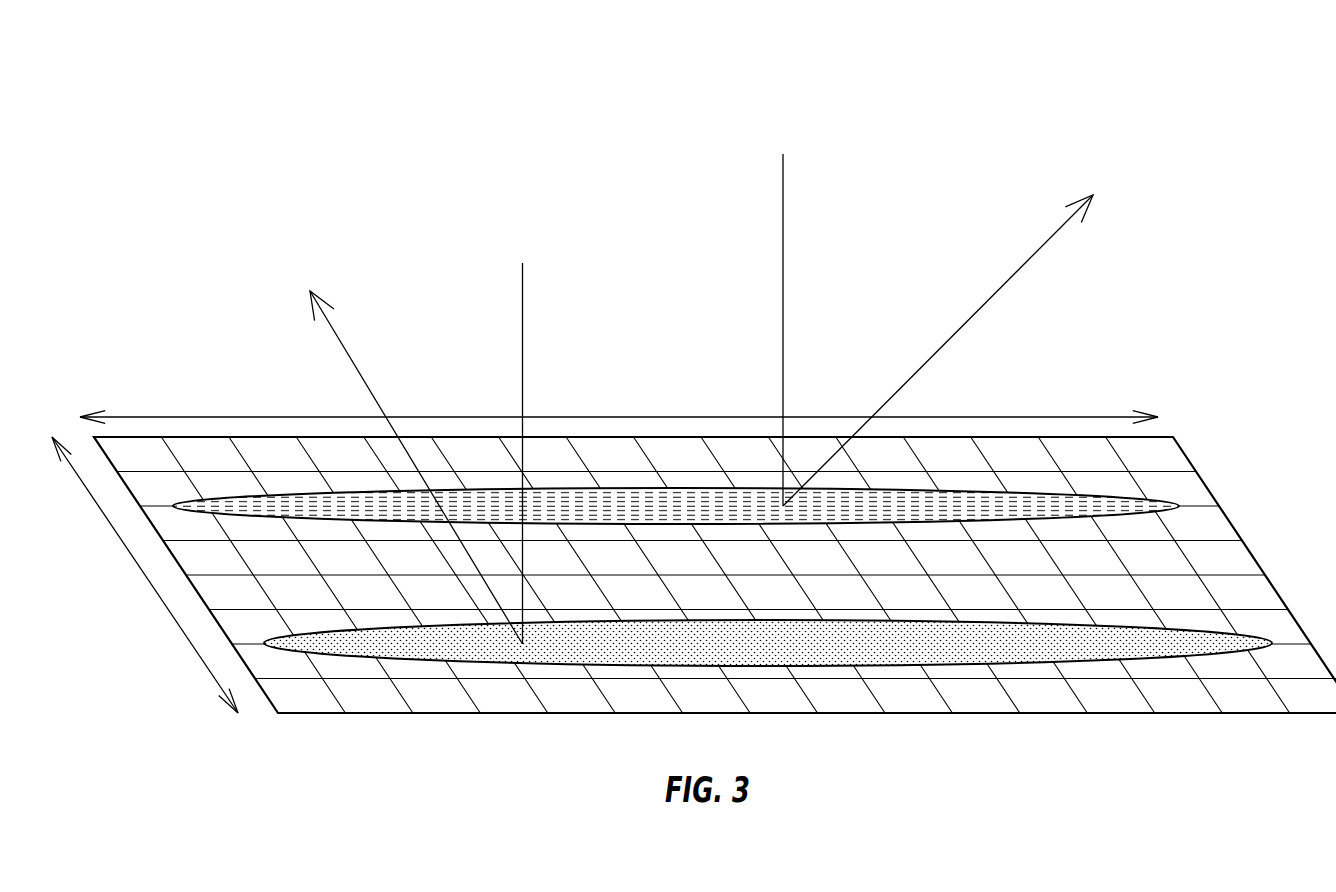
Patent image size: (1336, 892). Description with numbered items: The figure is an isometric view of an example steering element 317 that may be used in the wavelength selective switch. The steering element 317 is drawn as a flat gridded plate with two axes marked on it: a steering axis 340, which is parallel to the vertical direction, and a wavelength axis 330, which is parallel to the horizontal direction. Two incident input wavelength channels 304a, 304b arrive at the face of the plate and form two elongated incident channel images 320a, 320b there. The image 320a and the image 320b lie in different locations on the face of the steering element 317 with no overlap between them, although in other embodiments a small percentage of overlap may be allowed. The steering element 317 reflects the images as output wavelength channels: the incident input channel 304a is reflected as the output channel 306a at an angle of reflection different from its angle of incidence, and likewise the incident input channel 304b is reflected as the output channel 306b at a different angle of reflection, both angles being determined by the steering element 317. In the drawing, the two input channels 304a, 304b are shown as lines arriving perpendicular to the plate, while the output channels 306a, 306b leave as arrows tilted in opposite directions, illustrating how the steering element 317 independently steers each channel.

The steering element 317 is at (1015, 112).
The incident input wavelength channel 304a is at (523, 277).
The incident input wavelength channel 304b is at (783, 277).
The output wavelength channel 306a is at (352, 358).
The output wavelength channel 306b is at (1020, 268).
The incident channel image 320a is at (965, 651).
The incident channel image 320b is at (325, 506).
The wavelength axis 330 is at (222, 690).
The steering axis 340 is at (193, 416).